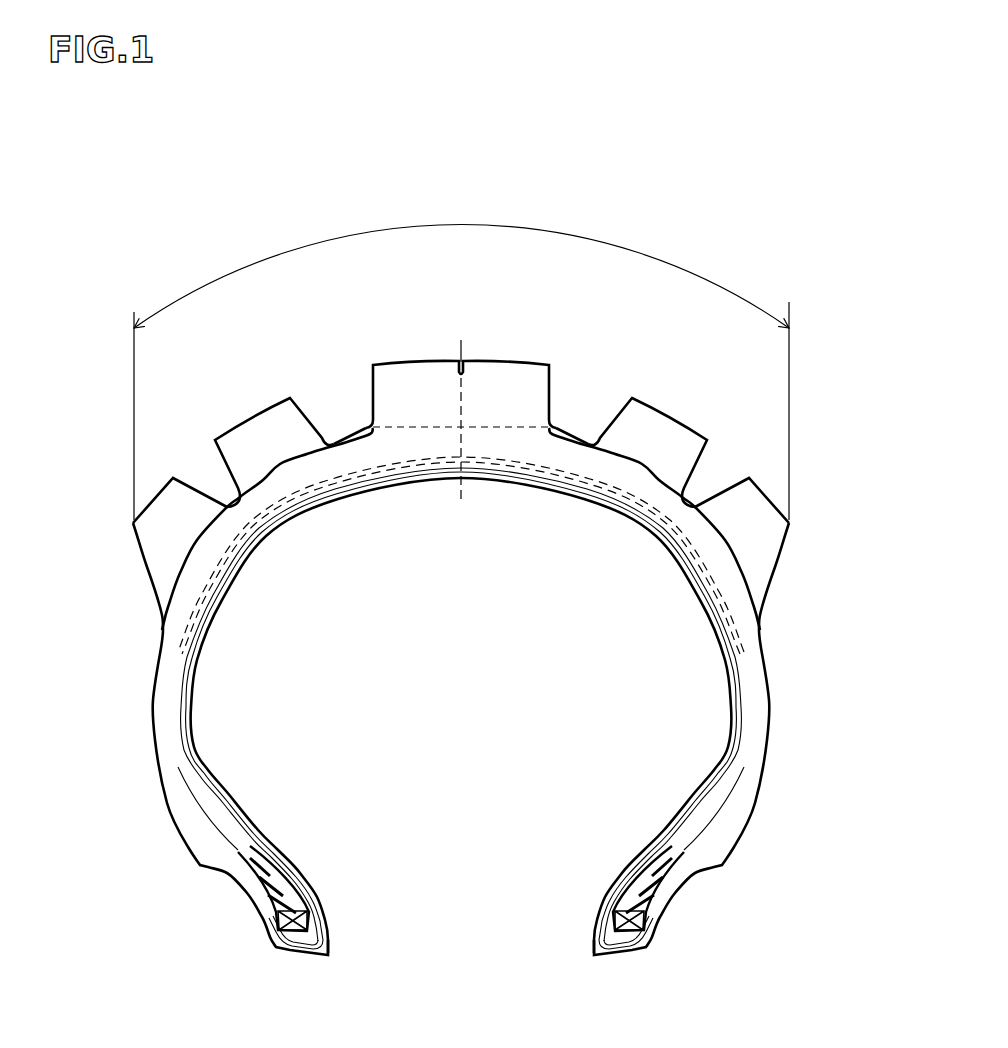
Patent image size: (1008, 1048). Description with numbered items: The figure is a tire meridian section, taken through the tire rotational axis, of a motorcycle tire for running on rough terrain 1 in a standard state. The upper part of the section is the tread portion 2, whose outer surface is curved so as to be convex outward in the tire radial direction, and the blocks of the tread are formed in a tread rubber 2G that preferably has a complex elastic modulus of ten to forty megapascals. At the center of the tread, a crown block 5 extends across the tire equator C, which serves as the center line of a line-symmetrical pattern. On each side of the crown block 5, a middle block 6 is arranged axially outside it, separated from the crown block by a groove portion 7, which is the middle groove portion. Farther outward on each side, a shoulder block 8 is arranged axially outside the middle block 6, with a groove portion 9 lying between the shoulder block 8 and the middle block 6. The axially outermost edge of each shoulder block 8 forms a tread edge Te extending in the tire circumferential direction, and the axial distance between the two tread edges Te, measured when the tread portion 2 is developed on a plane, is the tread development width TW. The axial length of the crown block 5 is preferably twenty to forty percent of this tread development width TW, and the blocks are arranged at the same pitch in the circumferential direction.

The tire for running on rough terrain 1 is at (793, 253).
The tread portion 2 is at (723, 255).
The tread rubber 2G is at (700, 538).
The crown block 5 is at (410, 362).
The middle block 6 is at (257, 415).
The groove portion 7 is at (340, 407).
The shoulder block 8 is at (165, 490).
The groove portion 9 is at (208, 475).
The tread development width TW is at (461, 356).
The tire equator C is at (463, 405).
The tread edge Te is at (133, 523).